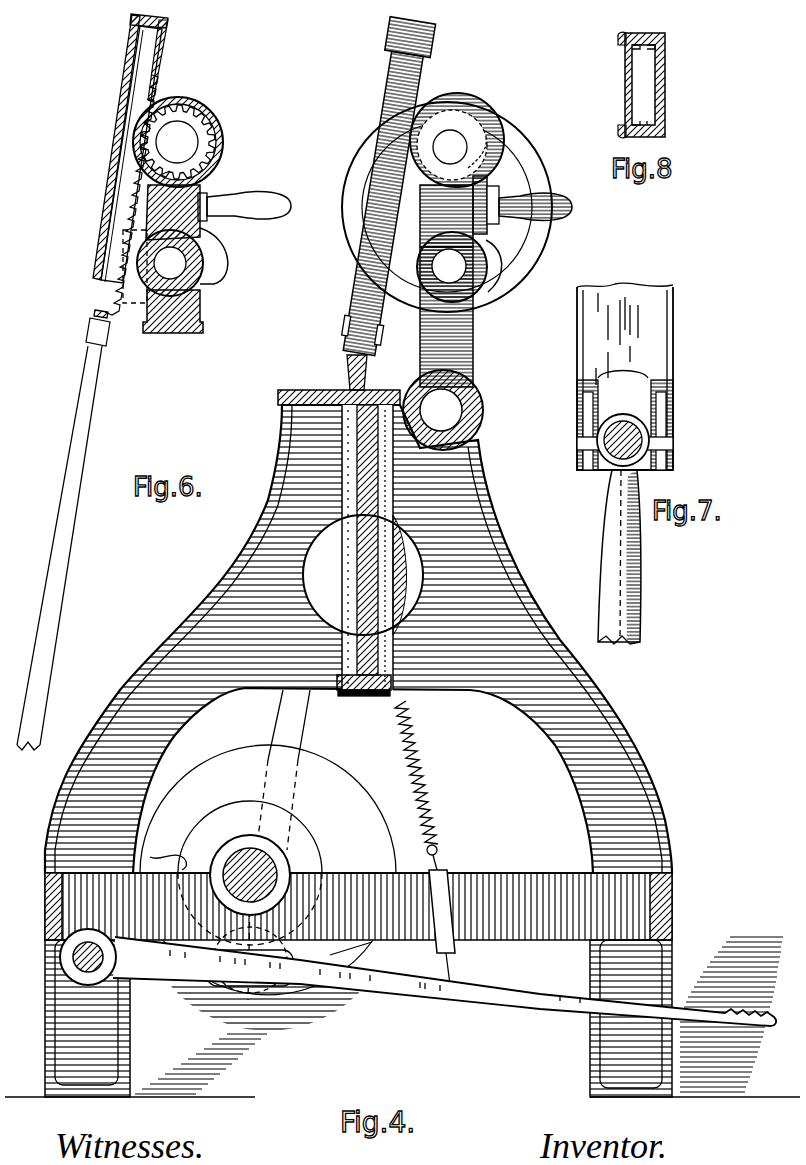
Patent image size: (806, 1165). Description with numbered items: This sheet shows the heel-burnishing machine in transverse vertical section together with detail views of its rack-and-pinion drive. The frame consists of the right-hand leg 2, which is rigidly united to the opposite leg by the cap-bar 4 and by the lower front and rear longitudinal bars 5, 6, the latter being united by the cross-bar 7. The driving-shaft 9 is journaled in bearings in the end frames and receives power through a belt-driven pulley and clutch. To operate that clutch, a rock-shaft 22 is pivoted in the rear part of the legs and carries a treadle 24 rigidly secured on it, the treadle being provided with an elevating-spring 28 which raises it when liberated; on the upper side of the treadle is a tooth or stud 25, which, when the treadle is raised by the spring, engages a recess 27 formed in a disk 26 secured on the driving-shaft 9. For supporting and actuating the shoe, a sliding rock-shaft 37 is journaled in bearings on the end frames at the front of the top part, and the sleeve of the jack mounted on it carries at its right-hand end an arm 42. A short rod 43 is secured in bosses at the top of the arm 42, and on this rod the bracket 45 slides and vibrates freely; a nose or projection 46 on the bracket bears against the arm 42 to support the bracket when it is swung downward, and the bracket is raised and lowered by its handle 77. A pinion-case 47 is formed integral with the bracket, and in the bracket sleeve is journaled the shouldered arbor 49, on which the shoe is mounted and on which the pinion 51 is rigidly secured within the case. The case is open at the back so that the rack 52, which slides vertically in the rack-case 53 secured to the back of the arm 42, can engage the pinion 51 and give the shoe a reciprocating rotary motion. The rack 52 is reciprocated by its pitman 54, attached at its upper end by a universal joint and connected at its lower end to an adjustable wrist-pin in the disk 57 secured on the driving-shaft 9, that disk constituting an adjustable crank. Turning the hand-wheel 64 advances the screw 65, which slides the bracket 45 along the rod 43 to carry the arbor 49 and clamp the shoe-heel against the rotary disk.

In FIG. 4, the right-hand leg 2 is at (402, 1017).
In FIG. 4, the cap-bar 4 is at (312, 390).
In FIG. 4, the lower front longitudinal bar 5 is at (670, 912).
In FIG. 4, the lower rear longitudinal bar 6 is at (45, 906).
In FIG. 4, the cross-bar 7 is at (362, 951).
In FIG. 4, the driving-shaft 9 is at (250, 875).
In FIG. 4, the rock-shaft 22 is at (88, 957).
In FIG. 4, the treadle 24 is at (444, 983).
In FIG. 4, the tooth or stud 25 is at (245, 960).
In FIG. 4, the disk 26 is at (250, 873).
In FIG. 4, the recess 27 is at (178, 860).
In FIG. 4, the elevating-spring 28 is at (426, 849).
In FIG. 4, the sliding rock-shaft 37 is at (478, 402).
In FIG. 4, the arm 42 is at (470, 377).
In FIG. 6, the arm 42 is at (173, 322).
In FIG. 4, the short rod 43 is at (452, 267).
In FIG. 6, the short rod 43 is at (170, 263).
In FIG. 6, the bracket 45 is at (173, 212).
In FIG. 4, the nose or projection 46 is at (489, 282).
In FIG. 6, the nose or projection 46 is at (222, 272).
In FIG. 4, the pinion-case 47 is at (468, 94).
In FIG. 6, the pinion-case 47 is at (189, 142).
In FIG. 4, the shouldered arbor 49 is at (452, 145).
In FIG. 6, the shouldered arbor 49 is at (178, 142).
In FIG. 4, the pinion 51 is at (478, 153).
In FIG. 6, the pinion 51 is at (169, 178).
In FIG. 6, the rack 52 is at (116, 226).
In FIG. 7, the rack 52 is at (625, 376).
In FIG. 4, the rack-case 53 is at (352, 282).
In FIG. 6, the rack-case 53 is at (160, 66).
In FIG. 8, the rack-case 53 is at (652, 85).
In FIG. 4, the pitman 54 is at (318, 677).
In FIG. 6, the pitman 54 is at (59, 548).
In FIG. 7, the pitman 54 is at (632, 557).
In FIG. 4, the disk 57 is at (268, 888).
In FIG. 4, the hand-wheel 64 is at (344, 200).
In FIG. 4, the screw 65 is at (446, 216).
In FIG. 4, the handle 77 is at (522, 206).
In FIG. 6, the handle 77 is at (244, 214).